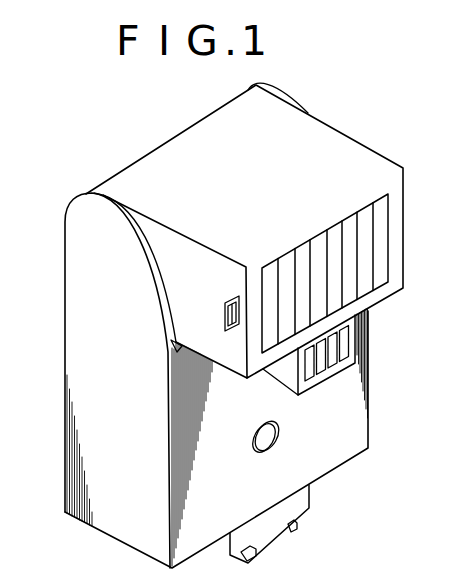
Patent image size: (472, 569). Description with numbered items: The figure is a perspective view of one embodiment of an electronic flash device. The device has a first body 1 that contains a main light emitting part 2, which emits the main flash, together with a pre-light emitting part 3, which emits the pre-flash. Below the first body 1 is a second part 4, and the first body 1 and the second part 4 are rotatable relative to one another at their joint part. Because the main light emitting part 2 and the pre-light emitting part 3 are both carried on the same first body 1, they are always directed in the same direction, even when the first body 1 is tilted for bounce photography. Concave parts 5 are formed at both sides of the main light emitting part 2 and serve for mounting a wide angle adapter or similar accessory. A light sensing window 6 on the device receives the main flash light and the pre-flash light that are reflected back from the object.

The first body 1 is at (340, 143).
The main light emitting part 2 is at (369, 245).
The pre-light emitting part 3 is at (342, 340).
The second part 4 is at (95, 367).
The concave parts 5 is at (228, 310).
The light sensing window 6 is at (282, 440).